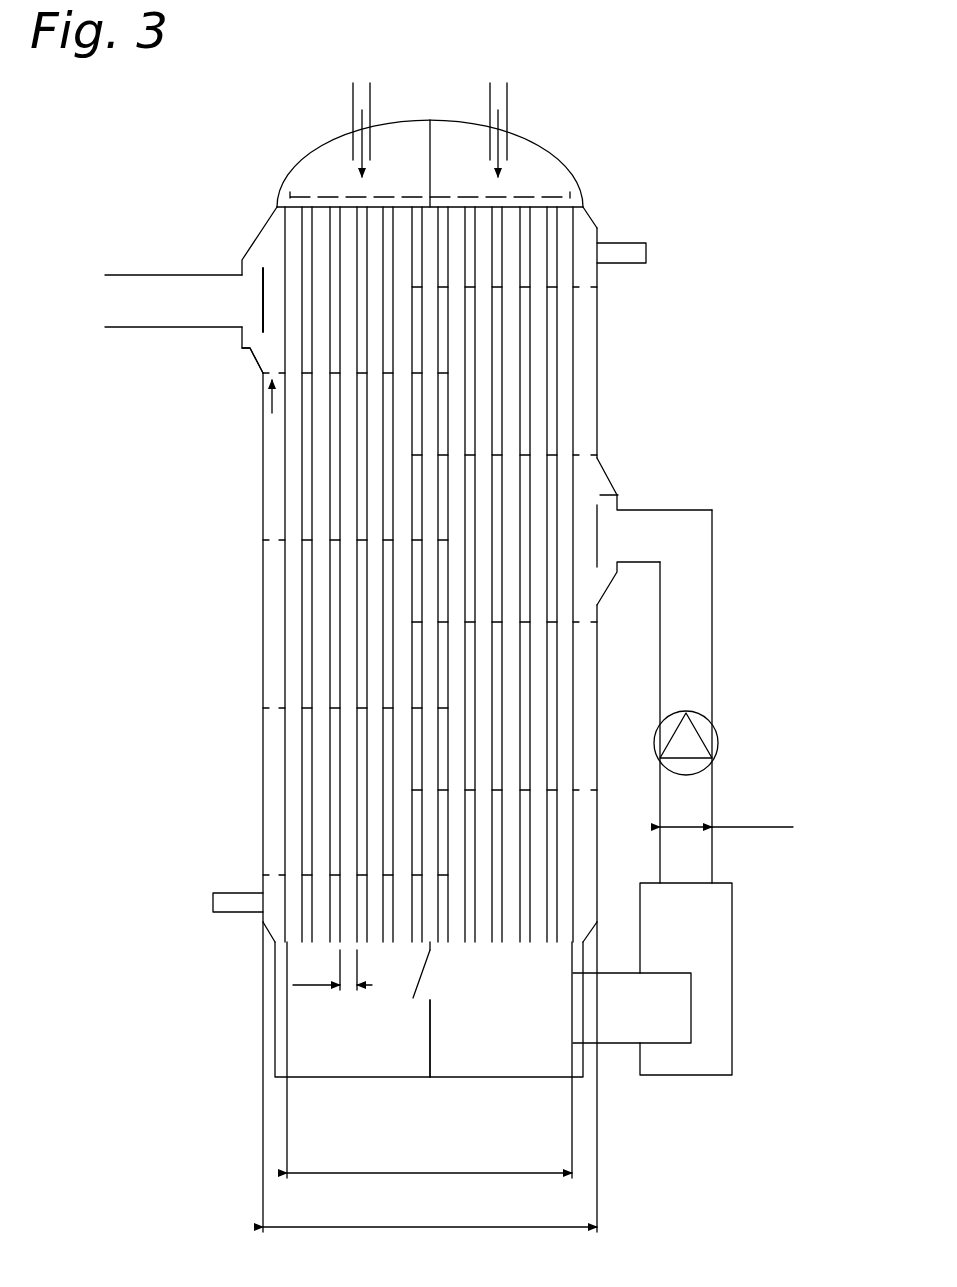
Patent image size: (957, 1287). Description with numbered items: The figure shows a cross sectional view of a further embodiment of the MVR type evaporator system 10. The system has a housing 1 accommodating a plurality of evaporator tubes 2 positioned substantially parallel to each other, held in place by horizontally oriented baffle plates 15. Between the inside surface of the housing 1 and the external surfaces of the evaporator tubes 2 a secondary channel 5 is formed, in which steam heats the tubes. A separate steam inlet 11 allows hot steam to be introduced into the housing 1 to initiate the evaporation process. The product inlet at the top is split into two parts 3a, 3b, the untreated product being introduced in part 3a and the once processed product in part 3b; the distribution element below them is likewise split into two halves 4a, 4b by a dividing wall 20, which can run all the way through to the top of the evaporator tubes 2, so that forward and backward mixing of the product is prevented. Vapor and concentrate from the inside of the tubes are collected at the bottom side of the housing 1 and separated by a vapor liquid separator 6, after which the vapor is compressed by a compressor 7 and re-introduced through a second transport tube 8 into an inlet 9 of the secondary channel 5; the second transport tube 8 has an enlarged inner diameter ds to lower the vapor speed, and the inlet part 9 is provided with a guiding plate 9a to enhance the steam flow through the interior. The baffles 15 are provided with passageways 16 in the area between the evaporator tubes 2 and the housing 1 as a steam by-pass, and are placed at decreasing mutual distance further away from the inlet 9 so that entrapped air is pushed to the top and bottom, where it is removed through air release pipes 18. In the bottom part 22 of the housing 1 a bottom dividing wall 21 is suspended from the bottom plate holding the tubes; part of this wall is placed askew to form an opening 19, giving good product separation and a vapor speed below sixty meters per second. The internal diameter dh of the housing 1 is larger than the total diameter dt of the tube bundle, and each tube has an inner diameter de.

The housing 1 is at (263, 803).
The evaporator tubes 2 is at (323, 233).
The first part of product inlet 3a is at (360, 100).
The second part of product inlet 3b is at (492, 102).
The first half of distribution element 4a is at (315, 195).
The second half of distribution element 4b is at (552, 195).
The secondary channel 5 is at (275, 327).
The vapor liquid separator 6 is at (615, 1018).
The compressor 7 is at (693, 747).
The second transport tube 8 is at (683, 540).
The inlet of secondary channel 9 is at (620, 494).
The guiding plate 9a is at (597, 543).
The evaporator system 10 is at (532, 113).
The steam inlet 11 is at (145, 302).
The baffle plates 15 is at (577, 287).
The passageways 16 is at (270, 413).
The air release pipes 18 is at (628, 252).
The opening 19 is at (437, 982).
The dividing wall 20 is at (430, 163).
The bottom dividing wall 21 is at (430, 1042).
The bottom part 22 is at (515, 1048).